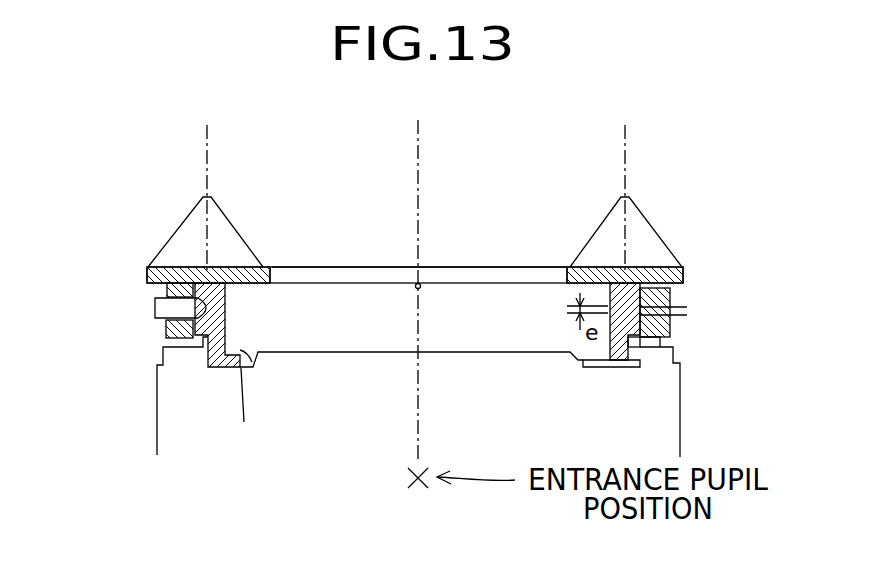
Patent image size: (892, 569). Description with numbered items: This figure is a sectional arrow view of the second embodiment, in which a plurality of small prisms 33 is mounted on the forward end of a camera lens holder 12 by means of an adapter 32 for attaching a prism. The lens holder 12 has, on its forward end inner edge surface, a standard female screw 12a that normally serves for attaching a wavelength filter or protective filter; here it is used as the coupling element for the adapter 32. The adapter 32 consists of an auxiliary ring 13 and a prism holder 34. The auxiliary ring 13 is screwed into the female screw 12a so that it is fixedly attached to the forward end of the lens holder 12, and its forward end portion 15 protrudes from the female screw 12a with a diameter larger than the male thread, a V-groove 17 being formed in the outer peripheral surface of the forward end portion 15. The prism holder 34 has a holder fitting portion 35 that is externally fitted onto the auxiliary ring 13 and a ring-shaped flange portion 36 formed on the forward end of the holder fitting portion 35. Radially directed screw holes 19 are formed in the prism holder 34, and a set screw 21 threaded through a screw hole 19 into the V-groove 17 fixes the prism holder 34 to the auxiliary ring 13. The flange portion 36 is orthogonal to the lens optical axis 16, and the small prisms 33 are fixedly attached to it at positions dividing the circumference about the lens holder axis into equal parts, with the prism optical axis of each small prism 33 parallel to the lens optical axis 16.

The lens holder 12 is at (681, 418).
The female screw 12a is at (252, 411).
The auxiliary ring 13 is at (230, 323).
The forward end portion 15 is at (672, 288).
The lens optical axis 16 is at (418, 161).
The V-groove 17 is at (660, 340).
The screw hole 19 is at (672, 315).
The set screw 21 is at (155, 302).
The adapter for attaching a prism 32 is at (508, 266).
The small prism 33 is at (240, 220).
The prism holder 34 is at (690, 277).
The holder fitting portion 35 is at (166, 333).
The flange portion 36 is at (147, 272).